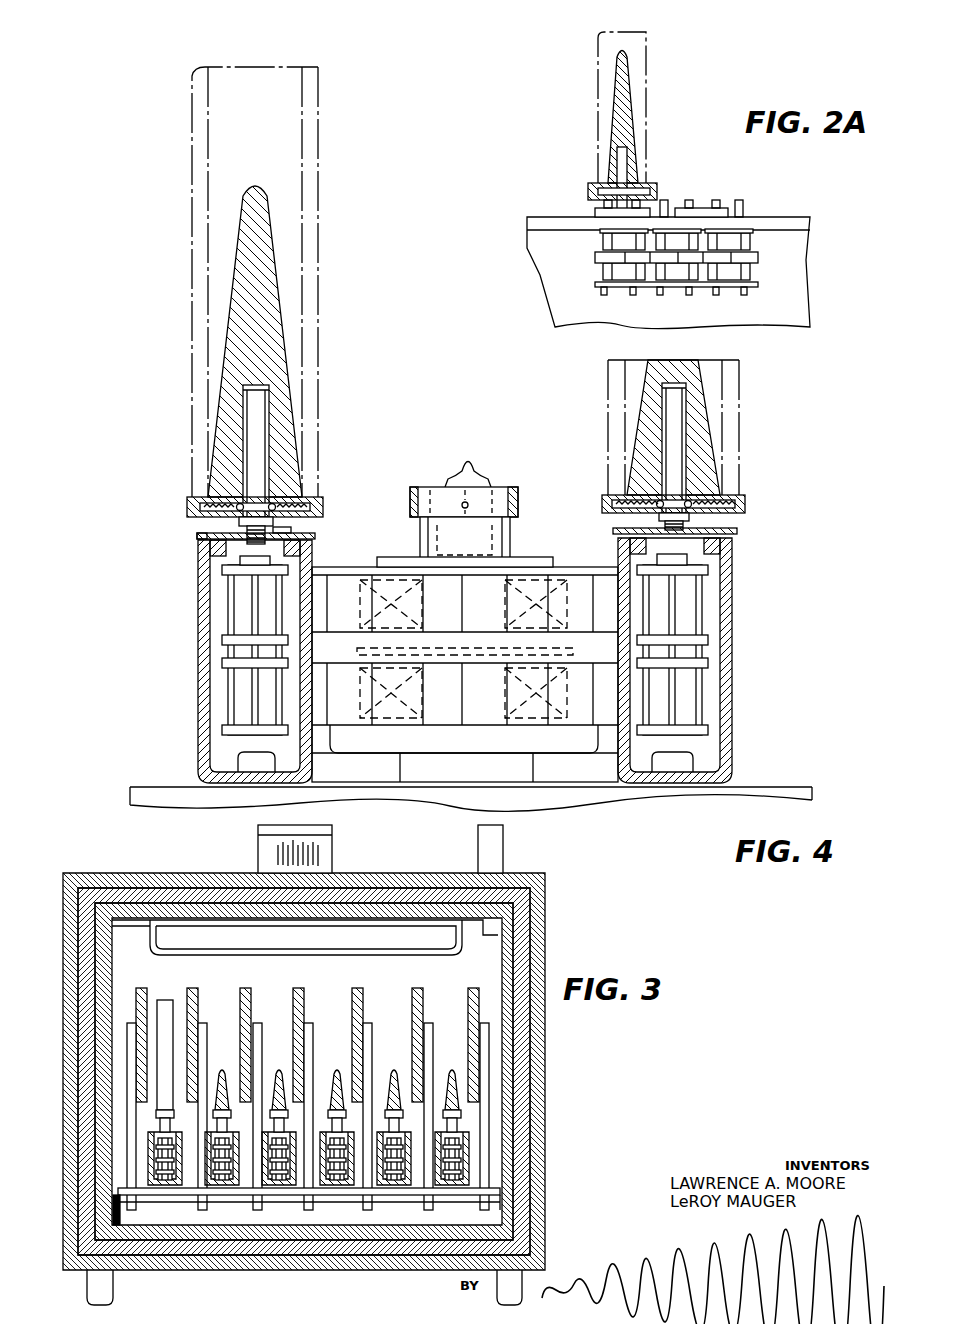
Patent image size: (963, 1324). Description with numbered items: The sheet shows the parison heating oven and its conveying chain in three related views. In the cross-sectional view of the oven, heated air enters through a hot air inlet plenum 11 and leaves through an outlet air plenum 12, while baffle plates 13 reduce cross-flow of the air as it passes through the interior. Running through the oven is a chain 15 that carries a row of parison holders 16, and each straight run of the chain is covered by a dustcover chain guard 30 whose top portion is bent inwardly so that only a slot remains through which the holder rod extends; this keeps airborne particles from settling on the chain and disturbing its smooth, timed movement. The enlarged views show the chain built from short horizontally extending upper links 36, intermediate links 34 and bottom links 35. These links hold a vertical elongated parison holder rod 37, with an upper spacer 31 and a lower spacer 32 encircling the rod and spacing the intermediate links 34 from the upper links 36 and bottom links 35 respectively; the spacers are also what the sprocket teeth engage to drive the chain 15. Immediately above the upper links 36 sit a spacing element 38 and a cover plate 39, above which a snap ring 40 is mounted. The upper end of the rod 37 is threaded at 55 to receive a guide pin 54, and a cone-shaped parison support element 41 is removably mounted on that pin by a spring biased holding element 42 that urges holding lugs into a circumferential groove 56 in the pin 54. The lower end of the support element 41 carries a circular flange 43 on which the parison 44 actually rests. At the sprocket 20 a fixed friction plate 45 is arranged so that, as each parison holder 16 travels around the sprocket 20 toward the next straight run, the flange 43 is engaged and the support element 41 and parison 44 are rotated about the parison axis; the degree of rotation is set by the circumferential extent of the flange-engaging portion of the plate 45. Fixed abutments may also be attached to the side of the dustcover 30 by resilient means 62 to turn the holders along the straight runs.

In FIG. 3, the hot air inlet plenum 11 is at (400, 1225).
In FIG. 3, the outlet air plenum 12 is at (402, 950).
In FIG. 3, the baffle plates 13 is at (127, 1030).
In FIG. 4, the chain 15 is at (228, 606).
In FIG. 3, the chain 15 is at (212, 1180).
In FIG. 2A, the parison holder 16 is at (586, 90).
In FIG. 4, the parison holder 16 is at (457, 315).
In FIG. 4, the sprocket 20 is at (605, 567).
In FIG. 4, the chain guard 30 is at (198, 672).
In FIG. 3, the chain guard 30 is at (268, 1186).
In FIG. 2A, the upper spacer 31 is at (603, 243).
In FIG. 2A, the lower spacer 32 is at (603, 273).
In FIG. 2A, the intermediate links 34 is at (758, 256).
In FIG. 4, the intermediate links 34 is at (228, 652).
In FIG. 3, the intermediate links 34 is at (160, 1157).
In FIG. 2A, the bottom links 35 is at (758, 286).
In FIG. 4, the bottom links 35 is at (222, 732).
In FIG. 3, the bottom links 35 is at (158, 1186).
In FIG. 2A, the upper links 36 is at (596, 216).
In FIG. 4, the upper links 36 is at (310, 573).
In FIG. 3, the upper links 36 is at (148, 1147).
In FIG. 2A, the parison holder rod 37 is at (604, 296).
In FIG. 4, the parison holder rod 37 is at (212, 541).
In FIG. 4, the spacing element 38 is at (291, 531).
In FIG. 4, the cover plate 39 is at (197, 536).
In FIG. 2A, the snap ring 40 is at (710, 208).
In FIG. 4, the cone-shaped parison support element 41 is at (275, 372).
In FIG. 4, the spring biased holding element 42 is at (276, 505).
In FIG. 4, the circular flange 43 is at (323, 498).
In FIG. 4, the parison 44 is at (318, 290).
In FIG. 3, the parison 44 is at (165, 1000).
In FIG. 4, the friction plate 45 is at (518, 497).
In FIG. 4, the guide pin 54 is at (270, 432).
In FIG. 4, the threaded portion 55 is at (245, 531).
In FIG. 4, the circumferential groove 56 is at (243, 503).
In FIG. 3, the resilient means 62 is at (221, 1072).